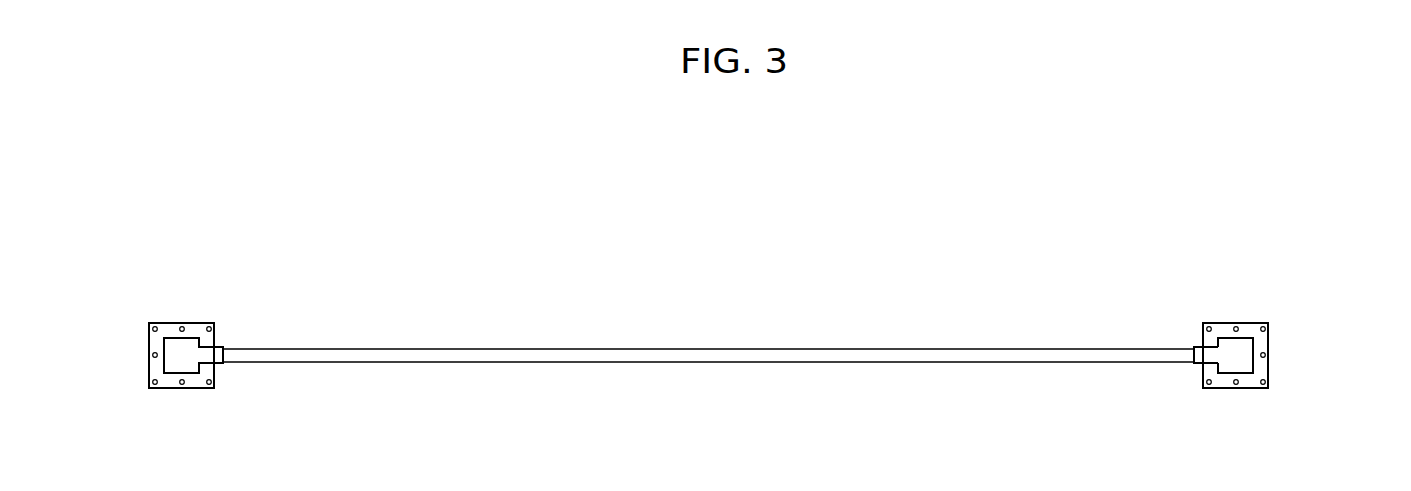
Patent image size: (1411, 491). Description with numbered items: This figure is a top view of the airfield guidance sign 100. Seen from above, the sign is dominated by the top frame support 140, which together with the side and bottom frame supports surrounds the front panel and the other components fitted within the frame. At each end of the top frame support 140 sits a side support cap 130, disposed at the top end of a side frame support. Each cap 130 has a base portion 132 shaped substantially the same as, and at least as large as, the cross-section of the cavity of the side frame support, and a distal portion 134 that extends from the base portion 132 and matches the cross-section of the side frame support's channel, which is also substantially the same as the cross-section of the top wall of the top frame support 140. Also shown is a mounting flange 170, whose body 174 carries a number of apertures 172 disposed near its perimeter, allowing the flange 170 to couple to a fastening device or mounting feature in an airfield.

The airfield guidance sign 100 is at (773, 266).
The side support cap 130 is at (1265, 340).
The base portion 132 is at (1235, 361).
The distal portion 134 is at (1202, 355).
The top frame support 140 is at (759, 352).
The mounting flange 170 is at (1290, 340).
The apertures 172 is at (1238, 323).
The body 174 is at (1262, 363).